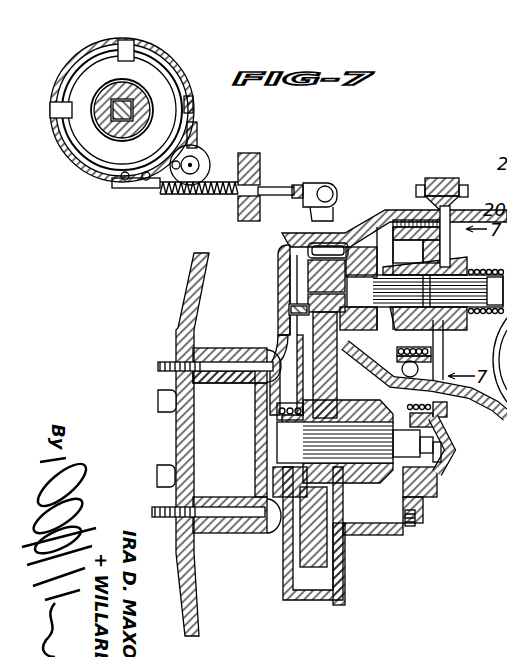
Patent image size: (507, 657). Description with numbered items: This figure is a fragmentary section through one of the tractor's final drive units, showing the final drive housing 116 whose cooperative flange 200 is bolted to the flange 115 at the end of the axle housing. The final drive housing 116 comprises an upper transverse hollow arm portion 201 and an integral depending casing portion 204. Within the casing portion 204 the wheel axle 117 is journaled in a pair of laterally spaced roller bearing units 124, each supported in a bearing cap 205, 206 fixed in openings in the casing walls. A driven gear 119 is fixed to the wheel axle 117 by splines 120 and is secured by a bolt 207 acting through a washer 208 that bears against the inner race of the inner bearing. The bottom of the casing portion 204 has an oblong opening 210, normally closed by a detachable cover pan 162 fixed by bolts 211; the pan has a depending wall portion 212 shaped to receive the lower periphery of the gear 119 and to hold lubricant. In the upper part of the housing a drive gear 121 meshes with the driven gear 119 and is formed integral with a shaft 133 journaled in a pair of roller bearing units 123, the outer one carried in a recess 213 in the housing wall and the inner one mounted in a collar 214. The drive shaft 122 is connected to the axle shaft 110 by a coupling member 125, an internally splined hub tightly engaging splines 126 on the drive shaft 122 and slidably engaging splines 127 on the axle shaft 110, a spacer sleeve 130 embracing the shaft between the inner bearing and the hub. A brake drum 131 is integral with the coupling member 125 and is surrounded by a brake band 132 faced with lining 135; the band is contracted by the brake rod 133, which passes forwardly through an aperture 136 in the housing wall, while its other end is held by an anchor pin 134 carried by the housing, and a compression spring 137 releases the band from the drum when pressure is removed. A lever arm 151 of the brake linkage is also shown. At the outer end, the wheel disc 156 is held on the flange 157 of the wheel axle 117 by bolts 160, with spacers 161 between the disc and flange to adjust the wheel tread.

The axle shaft 110 is at (120, 140).
The flange 115 is at (453, 186).
The final drive housing 116 is at (262, 175).
The wheel axle 117 is at (285, 432).
The driven gear 119 is at (325, 350).
The splines 120 is at (317, 453).
The drive gear 121 is at (306, 254).
The drive shaft 122 is at (345, 292).
The roller bearing unit 123 is at (295, 309).
The roller bearing unit 124 is at (405, 480).
The coupling member 125 is at (140, 116).
The splines 126 is at (391, 220).
The splines 127 is at (482, 294).
The spacer sleeve 130 is at (302, 228).
The brake drum 131 is at (193, 104).
The brake band 132 is at (92, 152).
The brake rod 133 is at (280, 190).
The anchor pin 134 is at (195, 164).
The lining 135 is at (167, 63).
The aperture 136 is at (242, 202).
The compression spring 137 is at (186, 196).
The lever arm 151 is at (355, 174).
The wheel disc 156 is at (188, 323).
The flange 157 is at (265, 412).
The bolt 160 is at (160, 396).
The spacer 161 is at (228, 378).
The cover pan 162 is at (352, 566).
The flange 200 is at (441, 178).
The hollow arm portion 201 is at (439, 180).
The depending casing portion 204 is at (282, 512).
The bearing cap 205 is at (272, 480).
The bearing cap 206 is at (452, 436).
The bolt 207 is at (437, 450).
The washer 208 is at (437, 494).
The opening 210 is at (392, 527).
The bolt 211 is at (418, 540).
The depending wall portion 212 is at (312, 590).
The recess 213 is at (287, 253).
The collar 214 is at (378, 233).